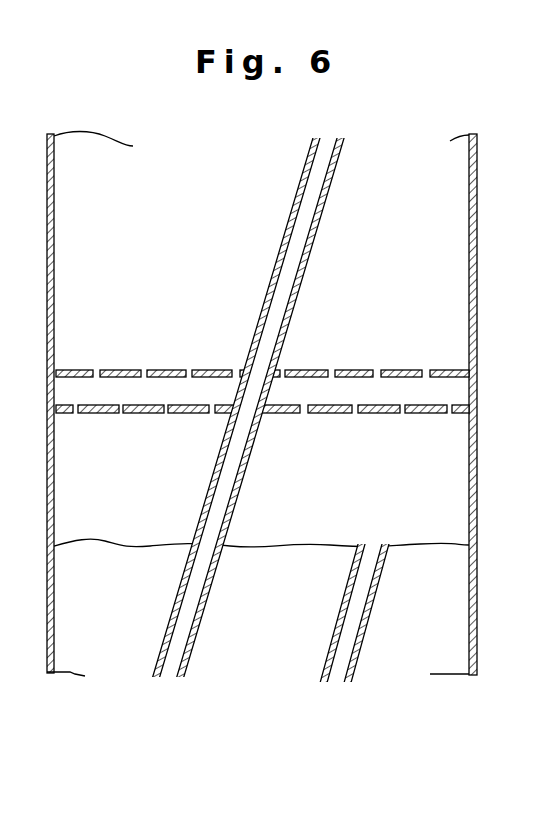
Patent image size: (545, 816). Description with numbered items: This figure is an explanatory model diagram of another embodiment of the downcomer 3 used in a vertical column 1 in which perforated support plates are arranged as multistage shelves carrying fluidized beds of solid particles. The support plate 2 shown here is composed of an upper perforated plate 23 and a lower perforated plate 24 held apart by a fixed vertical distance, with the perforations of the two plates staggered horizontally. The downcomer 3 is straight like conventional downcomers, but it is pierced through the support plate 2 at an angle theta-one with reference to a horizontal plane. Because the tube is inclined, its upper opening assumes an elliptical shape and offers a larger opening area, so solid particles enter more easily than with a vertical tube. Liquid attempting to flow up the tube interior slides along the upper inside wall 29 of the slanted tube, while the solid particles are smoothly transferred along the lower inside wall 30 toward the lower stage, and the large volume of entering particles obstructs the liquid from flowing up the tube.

The vertical column 1 is at (477, 218).
The support plate 2 is at (262, 434).
The upper perforated plate 23 is at (410, 378).
The lower perforated plate 24 is at (410, 458).
The downcomer 3 is at (288, 418).
The upper inside wall 29 is at (286, 231).
The lower inside wall 30 is at (302, 257).